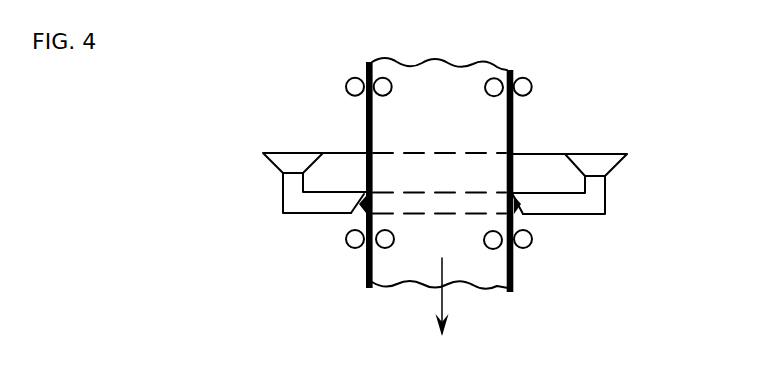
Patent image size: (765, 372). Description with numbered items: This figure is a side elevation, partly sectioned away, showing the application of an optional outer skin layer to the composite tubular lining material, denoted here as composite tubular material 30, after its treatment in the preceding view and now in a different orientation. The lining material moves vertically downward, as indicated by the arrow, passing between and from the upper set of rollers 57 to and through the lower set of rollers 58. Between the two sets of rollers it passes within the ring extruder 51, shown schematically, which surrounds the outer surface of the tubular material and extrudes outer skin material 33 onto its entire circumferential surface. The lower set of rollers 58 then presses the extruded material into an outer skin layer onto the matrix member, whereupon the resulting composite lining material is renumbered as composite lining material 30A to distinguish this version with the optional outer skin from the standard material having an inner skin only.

The composite tubular material 30 is at (513, 128).
The composite lining material with outer skin 30A is at (513, 277).
The upper set of rollers 57 is at (486, 90).
The lower set of rollers 58 is at (483, 240).
The ring extruder 51 is at (283, 180).
The outer skin material 33 is at (355, 220).